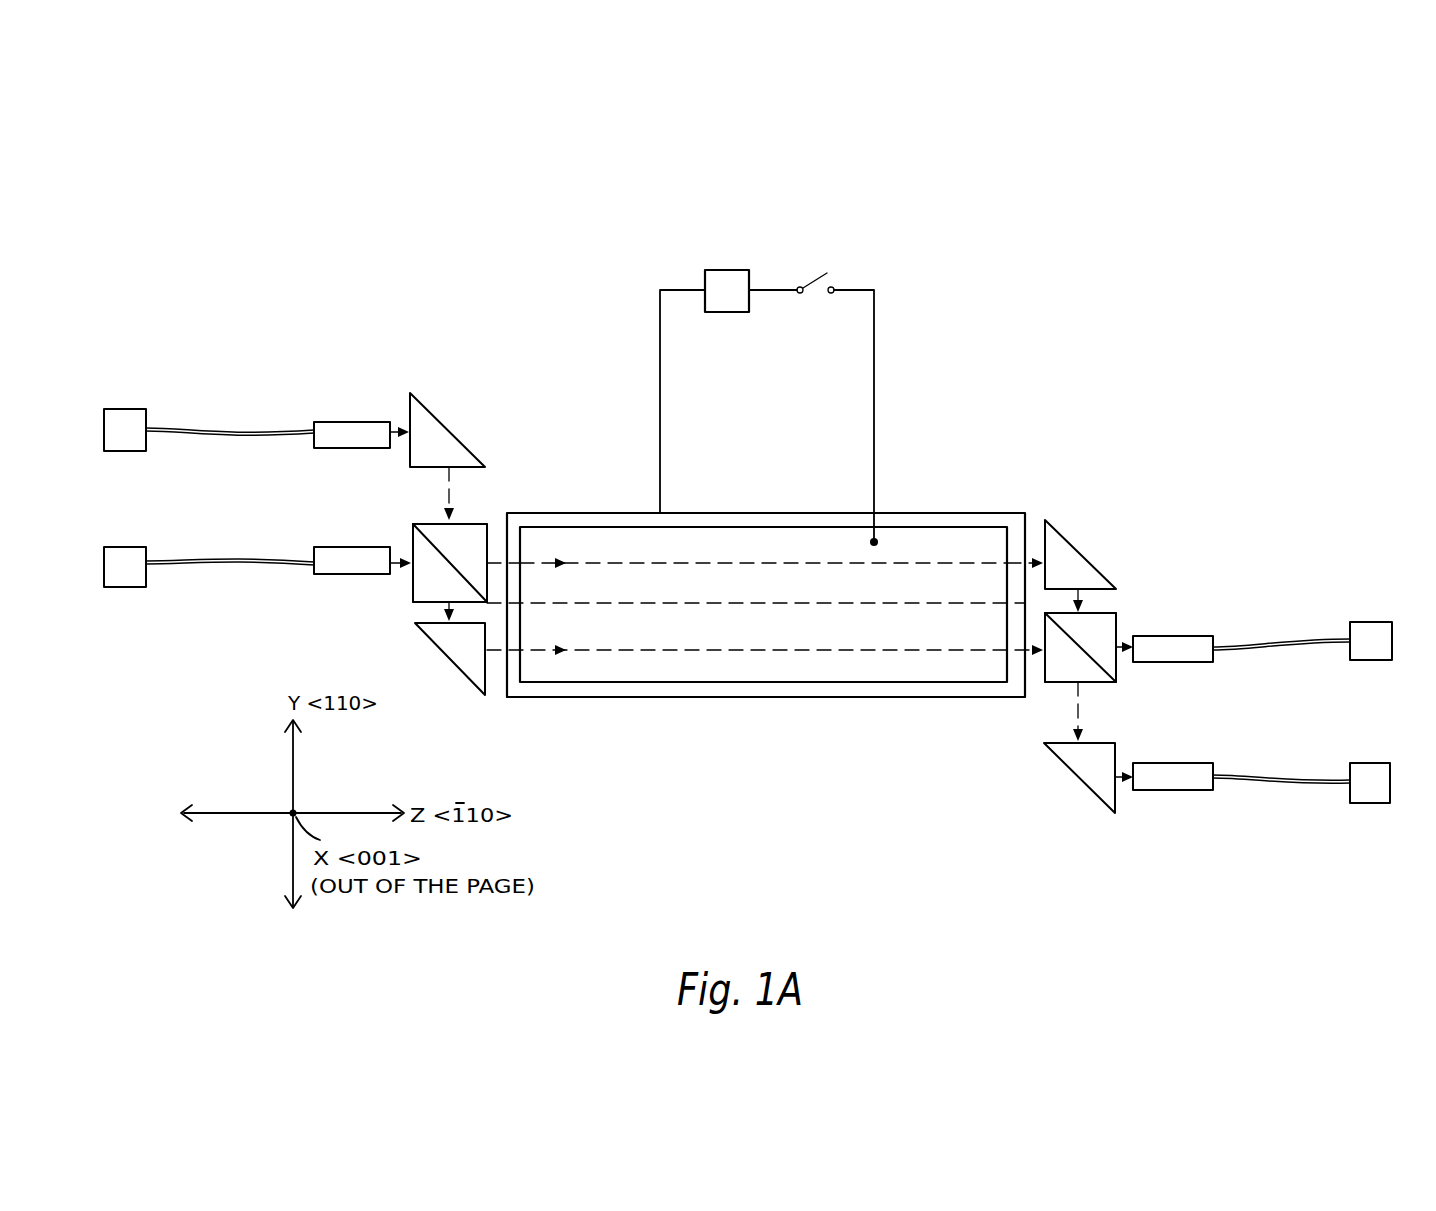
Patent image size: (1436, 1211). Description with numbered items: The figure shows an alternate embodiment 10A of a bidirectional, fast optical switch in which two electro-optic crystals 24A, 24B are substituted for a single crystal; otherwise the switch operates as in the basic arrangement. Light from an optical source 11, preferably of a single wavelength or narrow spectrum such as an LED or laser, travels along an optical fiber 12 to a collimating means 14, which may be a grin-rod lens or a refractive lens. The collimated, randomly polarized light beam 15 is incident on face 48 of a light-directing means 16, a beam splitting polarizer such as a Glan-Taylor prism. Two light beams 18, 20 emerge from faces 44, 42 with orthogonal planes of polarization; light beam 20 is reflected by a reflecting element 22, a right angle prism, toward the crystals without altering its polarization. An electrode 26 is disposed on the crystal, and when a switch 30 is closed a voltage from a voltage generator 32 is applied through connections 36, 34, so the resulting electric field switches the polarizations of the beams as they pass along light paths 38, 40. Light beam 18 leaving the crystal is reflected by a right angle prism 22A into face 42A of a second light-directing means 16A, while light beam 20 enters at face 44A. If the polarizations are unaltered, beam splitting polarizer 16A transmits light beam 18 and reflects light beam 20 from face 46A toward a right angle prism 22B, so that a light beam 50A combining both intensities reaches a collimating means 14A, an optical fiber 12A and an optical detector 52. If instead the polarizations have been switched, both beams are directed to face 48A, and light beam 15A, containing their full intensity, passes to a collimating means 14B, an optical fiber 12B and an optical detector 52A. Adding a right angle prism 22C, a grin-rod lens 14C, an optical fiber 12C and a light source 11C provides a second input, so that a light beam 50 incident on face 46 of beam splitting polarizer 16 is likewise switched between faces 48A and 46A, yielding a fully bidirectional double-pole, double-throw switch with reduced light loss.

The alternate embodiment of the optical switch 10A is at (541, 320).
The optical source 11 is at (130, 588).
The light source 11C is at (127, 409).
The optical fiber 12 is at (235, 567).
The optical fiber 12A is at (1285, 782).
The optical fiber 12B is at (1290, 641).
The optical fiber 12C is at (234, 428).
The collimating means 14 is at (355, 575).
The collimating means 14A is at (1190, 792).
The collimating means 14B is at (1203, 636).
The grin-rod lens 14C is at (353, 422).
The light beam 15 is at (404, 560).
The light beam 15A is at (1120, 650).
The light-directing means 16 is at (423, 522).
The second light-directing means 16A is at (1103, 620).
The light beam 18 is at (498, 565).
The light beam 20 is at (455, 613).
The reflecting element 22 is at (450, 663).
The right angle prism 22A is at (1080, 552).
The right angle prism 22B is at (1085, 787).
The right angle prism 22C is at (445, 430).
The electro-optic crystal 24A is at (612, 697).
The electro-optic crystal 24B is at (612, 513).
The electrode 26 is at (922, 533).
The switch 30 is at (810, 280).
The voltage generator 32 is at (727, 270).
The connection 34 is at (658, 362).
The connection 36 is at (875, 355).
The light path 38 is at (752, 563).
The light path 40 is at (752, 650).
The face 42 is at (422, 605).
The face 42A is at (1050, 613).
The face 44 is at (490, 540).
The face 44A is at (1045, 637).
The face 46 is at (470, 524).
The face 46A is at (1060, 683).
The face 48 is at (413, 585).
The face 48A is at (1118, 628).
The light beam 50 is at (447, 480).
The light beam 50A is at (1085, 710).
The optical detector 52 is at (1372, 803).
The optical detector 52A is at (1375, 622).